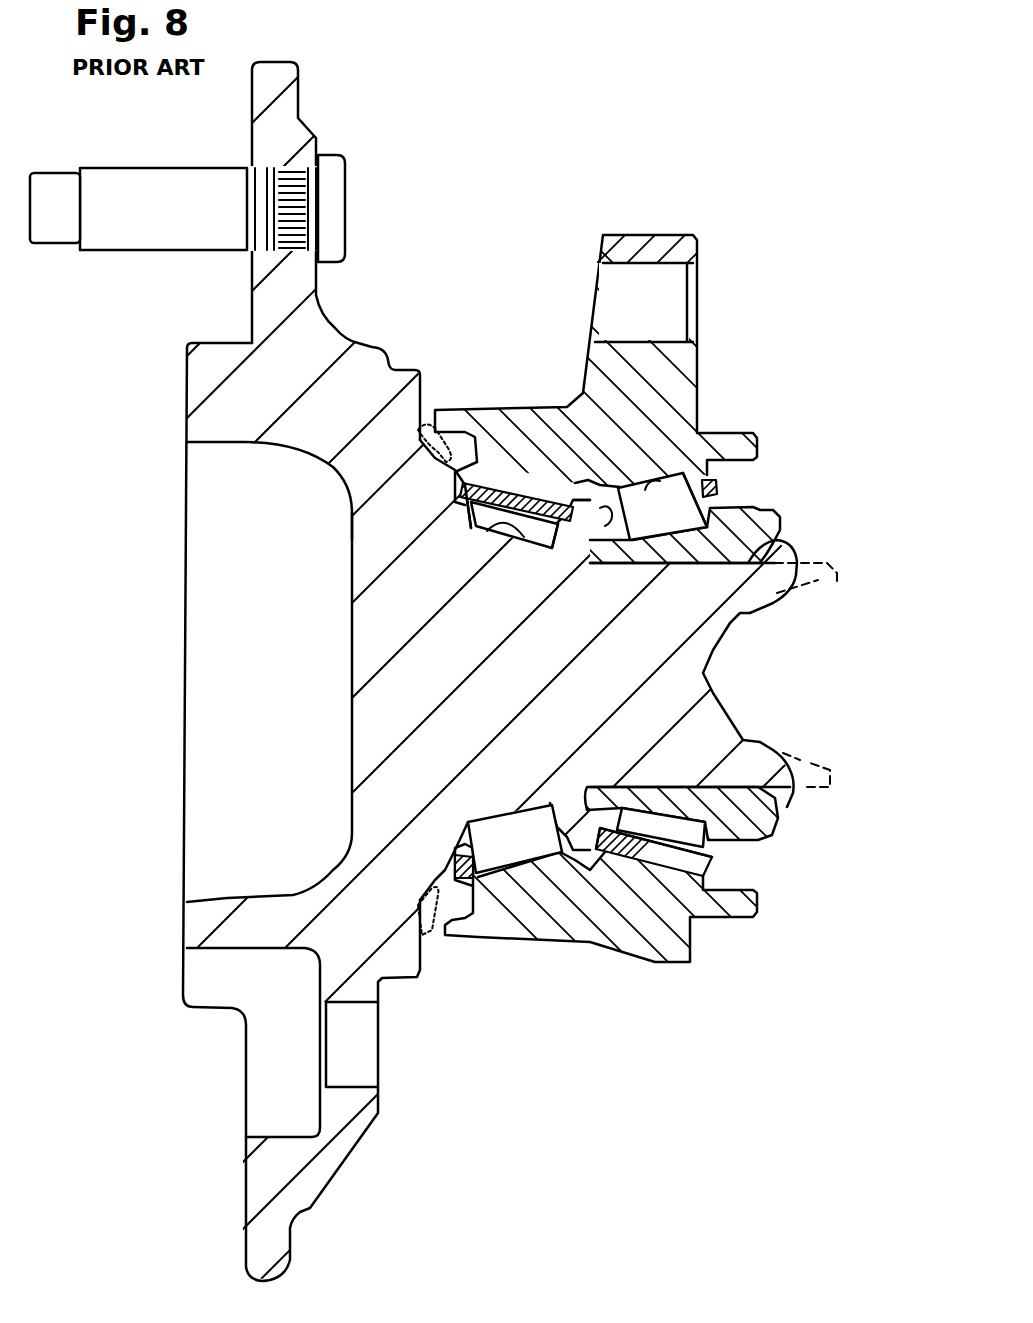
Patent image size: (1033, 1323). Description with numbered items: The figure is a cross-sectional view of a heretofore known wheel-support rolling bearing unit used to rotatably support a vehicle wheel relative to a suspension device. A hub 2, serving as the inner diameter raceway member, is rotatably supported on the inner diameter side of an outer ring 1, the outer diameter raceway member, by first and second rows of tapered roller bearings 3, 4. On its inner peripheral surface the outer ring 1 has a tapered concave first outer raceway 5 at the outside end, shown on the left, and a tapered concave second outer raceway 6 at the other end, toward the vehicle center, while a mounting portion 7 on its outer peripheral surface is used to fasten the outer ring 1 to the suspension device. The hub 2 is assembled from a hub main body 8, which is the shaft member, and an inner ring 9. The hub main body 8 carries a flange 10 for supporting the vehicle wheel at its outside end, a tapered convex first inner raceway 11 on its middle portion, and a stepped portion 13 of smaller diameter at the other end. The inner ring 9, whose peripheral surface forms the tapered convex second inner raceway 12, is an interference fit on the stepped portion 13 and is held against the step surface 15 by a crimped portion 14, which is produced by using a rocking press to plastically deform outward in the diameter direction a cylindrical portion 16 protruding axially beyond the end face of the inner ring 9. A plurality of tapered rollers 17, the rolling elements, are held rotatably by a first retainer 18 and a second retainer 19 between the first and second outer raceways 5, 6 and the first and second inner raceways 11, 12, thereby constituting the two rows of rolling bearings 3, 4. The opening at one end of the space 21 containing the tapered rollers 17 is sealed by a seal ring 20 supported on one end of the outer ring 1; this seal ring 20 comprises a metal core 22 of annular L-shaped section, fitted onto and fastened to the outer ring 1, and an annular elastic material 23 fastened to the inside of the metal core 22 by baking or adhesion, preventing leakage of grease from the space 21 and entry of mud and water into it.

The outer ring 1 is at (640, 357).
The hub 2 is at (375, 742).
The first row of tapered roller bearings 3 is at (522, 850).
The second row of tapered roller bearings 4 is at (672, 832).
The first outer raceway 5 is at (490, 468).
The second outer raceway 6 is at (652, 453).
The mounting portion 7 is at (630, 245).
The hub main body 8 is at (372, 523).
The inner ring 9 is at (733, 522).
The flange 10 is at (280, 127).
The first inner raceway 11 is at (470, 523).
The second inner raceway 12 is at (667, 517).
The stepped portion 13 is at (680, 560).
The crimped portion 14 is at (795, 555).
The step surface 15 is at (580, 525).
The cylindrical portion 16 is at (832, 601).
The tapered rollers 17 is at (523, 490).
The first retainer 18 is at (548, 503).
The second retainer 19 is at (632, 845).
The seal ring 20 is at (265, 337).
The space 21 is at (587, 520).
The metal core 22 is at (439, 938).
The elastic material 23 is at (427, 912).